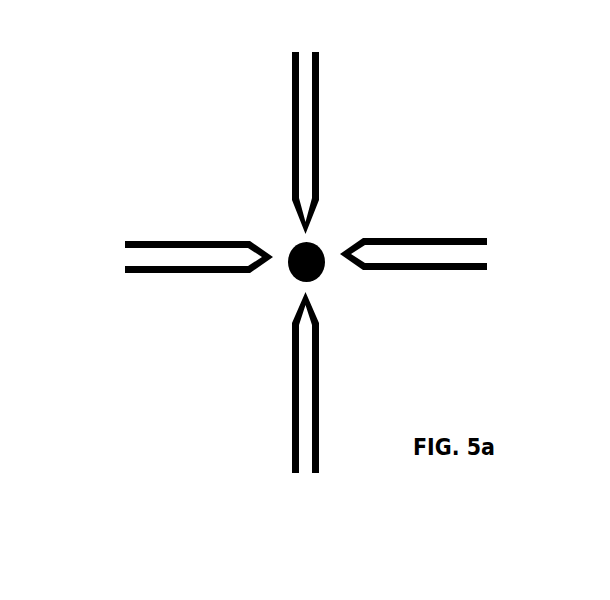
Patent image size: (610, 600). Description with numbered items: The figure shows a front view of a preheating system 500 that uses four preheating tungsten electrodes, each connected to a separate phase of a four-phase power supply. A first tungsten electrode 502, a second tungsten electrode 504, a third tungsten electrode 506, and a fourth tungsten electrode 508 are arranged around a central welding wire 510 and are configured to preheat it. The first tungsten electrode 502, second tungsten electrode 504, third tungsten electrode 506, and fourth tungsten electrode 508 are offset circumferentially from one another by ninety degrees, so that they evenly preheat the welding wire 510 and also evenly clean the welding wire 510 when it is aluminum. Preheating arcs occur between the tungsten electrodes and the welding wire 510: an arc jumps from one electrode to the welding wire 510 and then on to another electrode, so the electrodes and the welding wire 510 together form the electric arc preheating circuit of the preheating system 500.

The preheating system 500 is at (226, 103).
The first tungsten electrode 502 is at (147, 240).
The second tungsten electrode 504 is at (292, 163).
The third tungsten electrode 506 is at (473, 238).
The fourth tungsten electrode 508 is at (293, 370).
The welding wire 510 is at (315, 247).